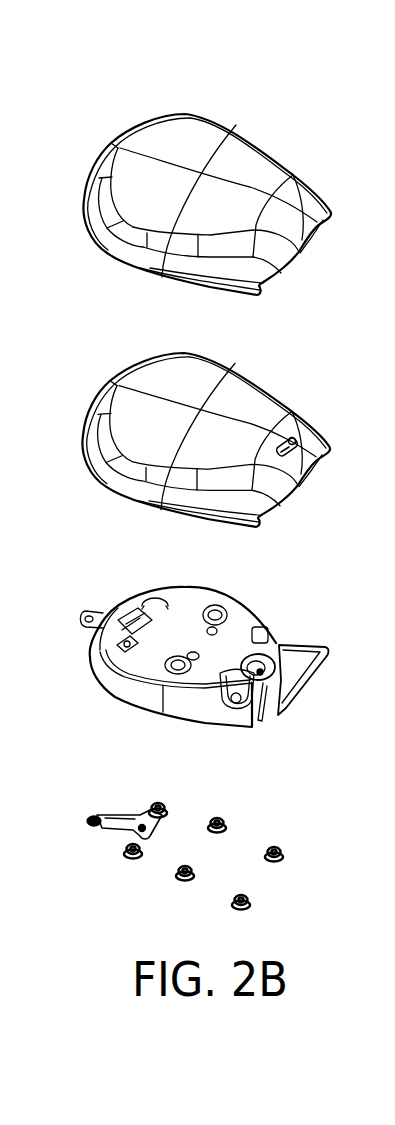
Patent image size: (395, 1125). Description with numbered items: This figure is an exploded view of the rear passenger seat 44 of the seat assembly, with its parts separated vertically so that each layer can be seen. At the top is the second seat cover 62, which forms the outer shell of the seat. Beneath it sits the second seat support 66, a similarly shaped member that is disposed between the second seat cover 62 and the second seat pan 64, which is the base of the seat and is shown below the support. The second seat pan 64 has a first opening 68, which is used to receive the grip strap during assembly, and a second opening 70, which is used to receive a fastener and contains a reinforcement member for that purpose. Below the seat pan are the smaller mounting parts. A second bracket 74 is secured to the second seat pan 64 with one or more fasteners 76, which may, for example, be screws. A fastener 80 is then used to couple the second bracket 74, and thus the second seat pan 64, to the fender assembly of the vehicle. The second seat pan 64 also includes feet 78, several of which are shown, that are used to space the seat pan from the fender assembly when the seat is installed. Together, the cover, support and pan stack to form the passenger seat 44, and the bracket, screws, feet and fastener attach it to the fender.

The passenger seat 44 is at (119, 94).
The second seat cover 62 is at (236, 125).
The second seat pan 64 is at (122, 602).
The second seat support 66 is at (233, 370).
The first opening 68 is at (295, 440).
The second opening 70 is at (279, 642).
The second bracket 74 is at (108, 830).
The fasteners 76 is at (143, 817).
The feet 78 is at (163, 805).
The fastener 80 is at (96, 816).